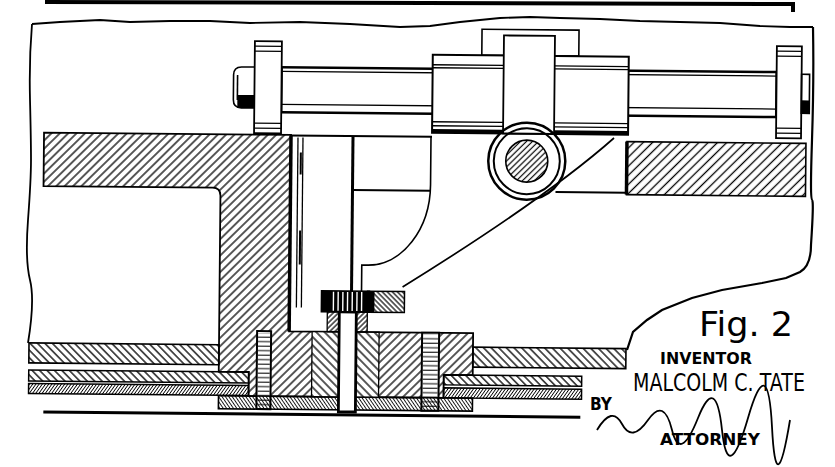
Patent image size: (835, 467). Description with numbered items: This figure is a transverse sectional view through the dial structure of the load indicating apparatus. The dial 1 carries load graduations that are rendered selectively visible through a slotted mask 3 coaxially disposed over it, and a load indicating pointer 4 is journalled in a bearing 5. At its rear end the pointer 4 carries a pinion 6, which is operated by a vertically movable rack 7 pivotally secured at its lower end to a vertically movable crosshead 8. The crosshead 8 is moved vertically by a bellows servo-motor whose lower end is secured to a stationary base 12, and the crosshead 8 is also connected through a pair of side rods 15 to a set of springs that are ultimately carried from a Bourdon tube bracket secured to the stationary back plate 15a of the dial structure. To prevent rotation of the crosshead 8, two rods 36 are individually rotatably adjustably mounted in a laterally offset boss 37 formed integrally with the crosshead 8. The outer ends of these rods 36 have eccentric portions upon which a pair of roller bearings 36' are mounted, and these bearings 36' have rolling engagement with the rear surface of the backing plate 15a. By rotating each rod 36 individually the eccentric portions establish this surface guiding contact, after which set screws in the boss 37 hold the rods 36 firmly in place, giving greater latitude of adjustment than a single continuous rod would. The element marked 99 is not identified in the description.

The dial 1 is at (58, 374).
The slotted mask 3 is at (108, 389).
The load indicating pointer 4 is at (185, 413).
The bearing 5 is at (375, 335).
The pinion 6 is at (335, 288).
The rack 7 is at (392, 288).
The crosshead 8 is at (472, 236).
The stationary base 12 is at (768, 264).
The side rods 15 is at (516, 148).
The back plate 15a is at (698, 146).
The rods 36 is at (529, 78).
The roller bearings 36' is at (507, 78).
The boss 37 is at (612, 69).
The plate 99 is at (183, 351).